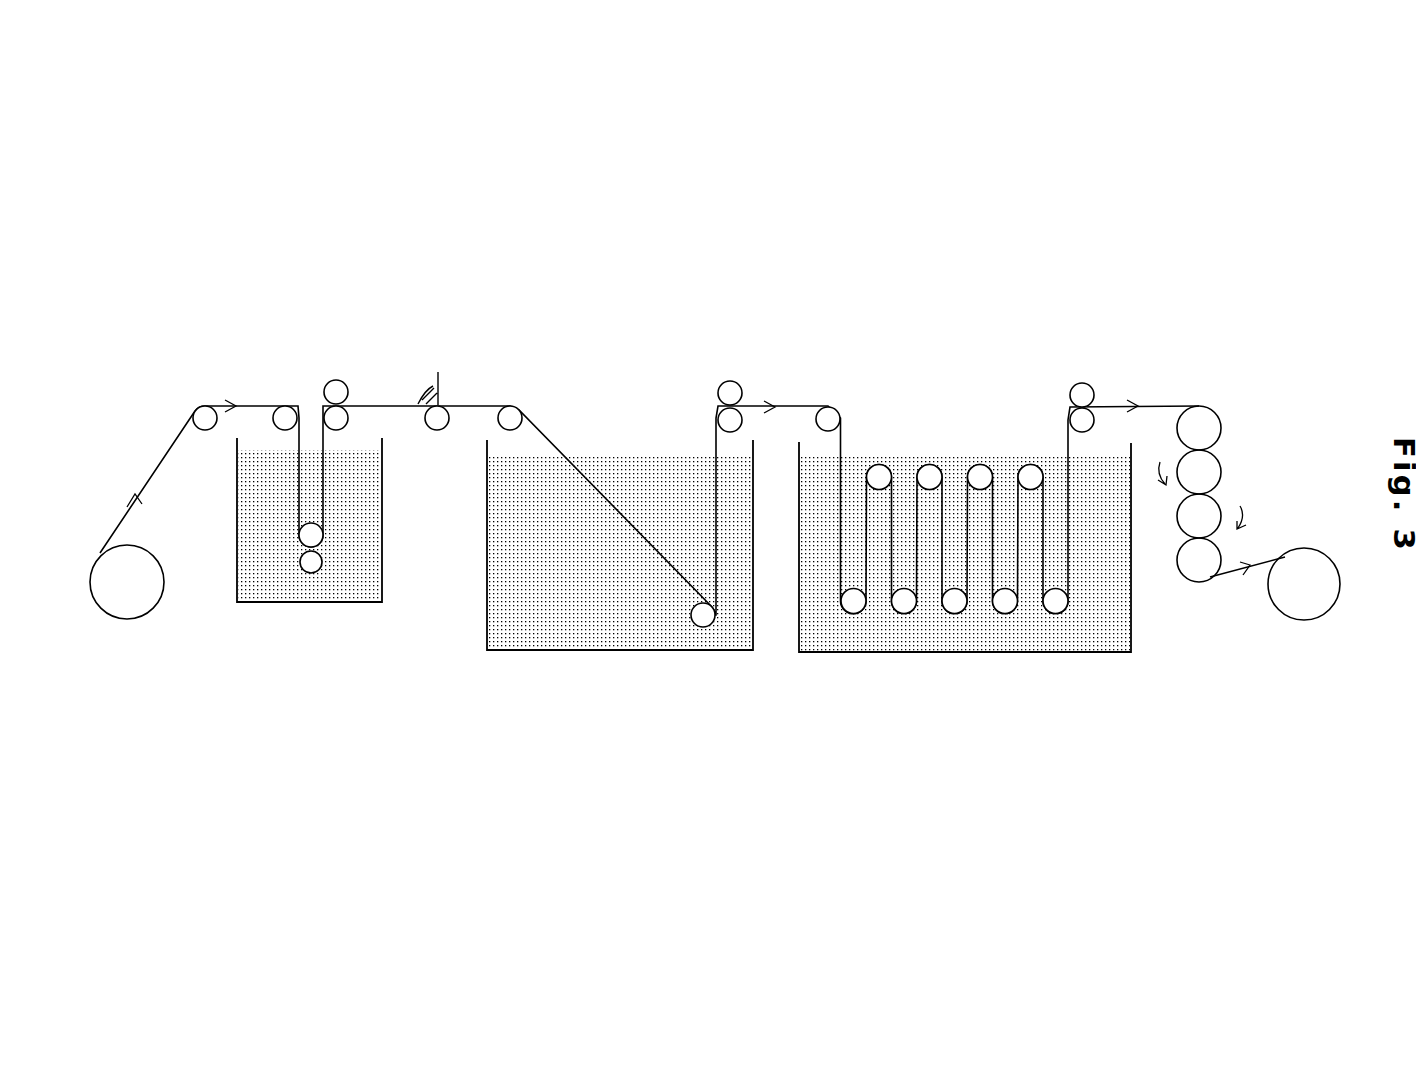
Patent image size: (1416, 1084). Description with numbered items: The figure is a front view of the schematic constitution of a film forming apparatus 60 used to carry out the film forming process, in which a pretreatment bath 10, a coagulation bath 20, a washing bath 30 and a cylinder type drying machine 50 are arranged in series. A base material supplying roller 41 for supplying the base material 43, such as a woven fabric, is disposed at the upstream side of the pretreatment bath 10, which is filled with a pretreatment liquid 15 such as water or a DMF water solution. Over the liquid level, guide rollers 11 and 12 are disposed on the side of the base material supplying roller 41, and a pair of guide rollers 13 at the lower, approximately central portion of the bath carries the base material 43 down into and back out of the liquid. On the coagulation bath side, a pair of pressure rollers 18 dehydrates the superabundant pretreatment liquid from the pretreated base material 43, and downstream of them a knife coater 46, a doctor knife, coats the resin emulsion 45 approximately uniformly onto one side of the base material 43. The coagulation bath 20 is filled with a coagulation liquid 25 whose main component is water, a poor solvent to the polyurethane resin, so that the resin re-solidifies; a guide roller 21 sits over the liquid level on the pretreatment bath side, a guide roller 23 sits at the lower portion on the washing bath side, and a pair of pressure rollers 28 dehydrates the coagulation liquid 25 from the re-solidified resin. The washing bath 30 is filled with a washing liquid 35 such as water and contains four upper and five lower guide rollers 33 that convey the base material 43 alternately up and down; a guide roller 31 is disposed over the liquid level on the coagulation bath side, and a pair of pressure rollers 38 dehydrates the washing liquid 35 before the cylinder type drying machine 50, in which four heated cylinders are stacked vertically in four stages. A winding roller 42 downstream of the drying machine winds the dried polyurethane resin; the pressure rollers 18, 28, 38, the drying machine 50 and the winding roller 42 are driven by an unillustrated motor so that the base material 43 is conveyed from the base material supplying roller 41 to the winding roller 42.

The pretreatment bath 10 is at (283, 603).
The guide roller 11 is at (207, 430).
The guide roller 12 is at (290, 405).
The pair of guide rollers 13 is at (322, 536).
The pretreatment liquid 15 is at (285, 587).
The pair of pressure rollers 18 is at (333, 382).
The coagulation bath 20 is at (568, 652).
The guide roller 21 is at (517, 405).
The guide roller 23 is at (706, 626).
The coagulation liquid 25 is at (547, 620).
The pair of pressure rollers 28 is at (730, 382).
The washing bath 30 is at (892, 653).
The guide roller 31 is at (833, 405).
The guide rollers 33 is at (958, 610).
The washing liquid 35 is at (1083, 632).
The pair of pressure rollers 38 is at (1076, 383).
The base material supplying roller 41 is at (115, 617).
The winding roller 42 is at (1307, 618).
The base material 43 is at (163, 457).
The resin emulsion 45 is at (427, 400).
The knife coater 46 is at (438, 382).
The cylinder type drying machine 50 is at (1222, 422).
The treatment apparatus 60 is at (628, 327).